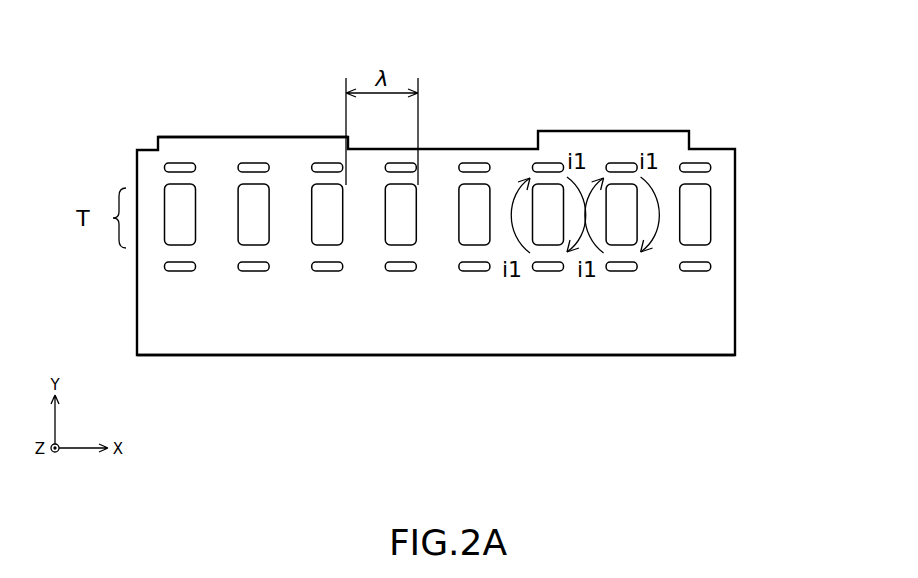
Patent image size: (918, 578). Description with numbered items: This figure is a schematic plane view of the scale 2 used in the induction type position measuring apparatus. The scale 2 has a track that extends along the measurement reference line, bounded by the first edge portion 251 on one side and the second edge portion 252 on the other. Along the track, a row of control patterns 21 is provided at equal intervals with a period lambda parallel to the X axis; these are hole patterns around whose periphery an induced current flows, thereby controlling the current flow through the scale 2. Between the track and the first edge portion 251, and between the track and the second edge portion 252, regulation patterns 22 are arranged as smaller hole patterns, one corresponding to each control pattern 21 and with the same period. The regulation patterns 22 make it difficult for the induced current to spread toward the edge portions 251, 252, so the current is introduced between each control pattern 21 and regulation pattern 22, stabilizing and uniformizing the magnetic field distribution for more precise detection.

The scale 2 is at (668, 112).
The control pattern 21 is at (175, 202).
The regulation pattern 22 is at (185, 168).
The first edge portion 251 is at (465, 149).
The second edge portion 252 is at (437, 356).